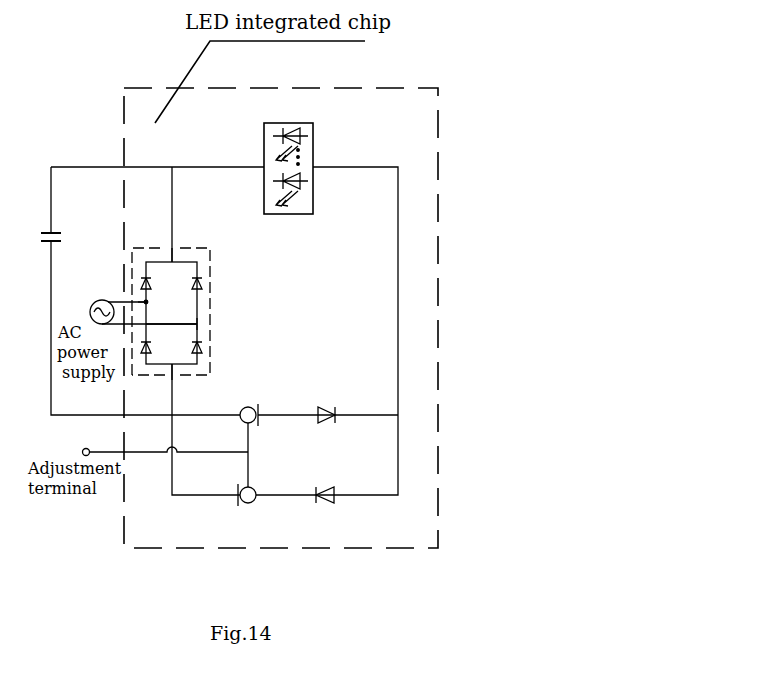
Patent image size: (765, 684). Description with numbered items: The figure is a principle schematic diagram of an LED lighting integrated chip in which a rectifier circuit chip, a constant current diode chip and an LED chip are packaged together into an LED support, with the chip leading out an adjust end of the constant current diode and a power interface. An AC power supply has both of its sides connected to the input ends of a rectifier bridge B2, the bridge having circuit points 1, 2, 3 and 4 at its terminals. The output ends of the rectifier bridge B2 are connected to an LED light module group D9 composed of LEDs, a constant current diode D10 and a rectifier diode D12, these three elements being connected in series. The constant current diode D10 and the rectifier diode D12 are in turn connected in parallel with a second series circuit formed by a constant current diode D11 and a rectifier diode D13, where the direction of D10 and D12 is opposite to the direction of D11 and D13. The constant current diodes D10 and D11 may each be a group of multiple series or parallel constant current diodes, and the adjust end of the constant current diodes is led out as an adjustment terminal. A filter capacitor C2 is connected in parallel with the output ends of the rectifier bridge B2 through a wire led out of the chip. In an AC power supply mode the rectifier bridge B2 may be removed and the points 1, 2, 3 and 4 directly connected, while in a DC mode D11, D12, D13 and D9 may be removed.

The filter capacitor C2 is at (65, 238).
The rectifier bridge B2 is at (189, 309).
The point 1 is at (148, 302).
The point 2 is at (162, 245).
The point 3 is at (203, 322).
The point 4 is at (162, 382).
The LED light module group D9 is at (268, 168).
The constant current diode D10 is at (244, 407).
The constant current diode D11 is at (250, 509).
The rectifier diode D12 is at (324, 405).
The rectifier diode D13 is at (326, 511).